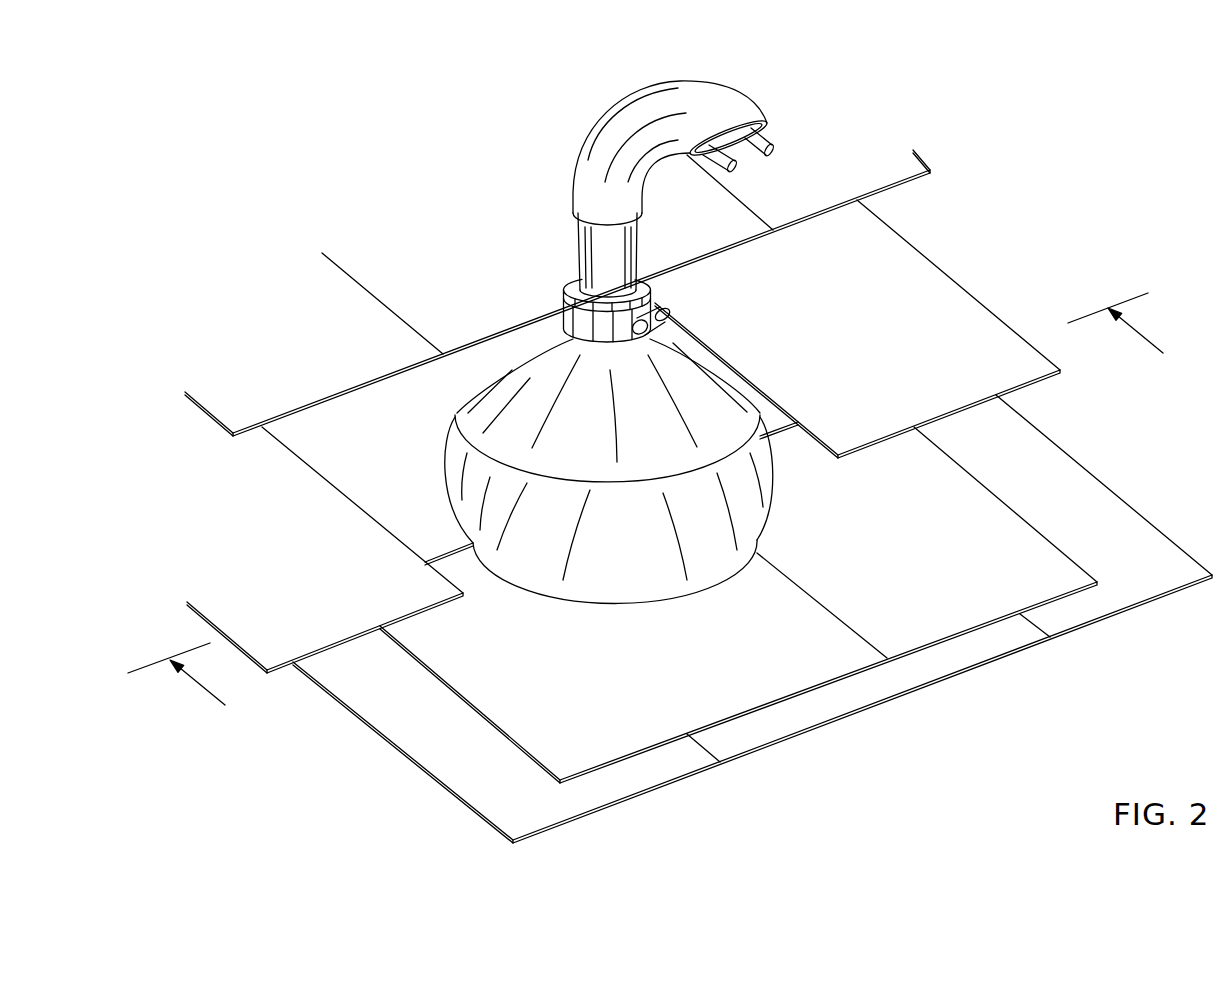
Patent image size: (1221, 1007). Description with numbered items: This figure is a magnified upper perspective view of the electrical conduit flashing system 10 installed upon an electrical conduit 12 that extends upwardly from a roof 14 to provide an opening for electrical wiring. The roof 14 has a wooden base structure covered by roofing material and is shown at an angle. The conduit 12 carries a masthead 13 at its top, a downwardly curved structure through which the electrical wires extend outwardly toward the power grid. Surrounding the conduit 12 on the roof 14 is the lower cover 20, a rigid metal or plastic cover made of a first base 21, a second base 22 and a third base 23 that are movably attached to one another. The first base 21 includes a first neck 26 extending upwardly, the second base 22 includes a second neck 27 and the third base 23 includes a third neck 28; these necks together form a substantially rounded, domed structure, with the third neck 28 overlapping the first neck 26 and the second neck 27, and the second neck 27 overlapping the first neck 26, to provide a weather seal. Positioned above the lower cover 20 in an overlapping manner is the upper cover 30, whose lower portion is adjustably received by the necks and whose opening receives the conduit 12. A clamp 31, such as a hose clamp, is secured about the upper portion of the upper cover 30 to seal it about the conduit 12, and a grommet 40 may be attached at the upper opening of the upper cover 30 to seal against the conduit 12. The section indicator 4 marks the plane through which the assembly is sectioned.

The electrical conduit flashing system 10 is at (215, 150).
The conduit 12 is at (577, 223).
The masthead 13 is at (740, 87).
The roof 14 is at (210, 416).
The lower cover 20 is at (567, 584).
The first base 21 is at (913, 617).
The second base 22 is at (713, 703).
The third base 23 is at (377, 484).
The first neck 26 is at (757, 508).
The second neck 27 is at (543, 563).
The third neck 28 is at (447, 493).
The upper cover 30 is at (458, 383).
The clamp 31 is at (660, 319).
The grommet 40 is at (572, 280).
The section line 4 is at (655, 513).